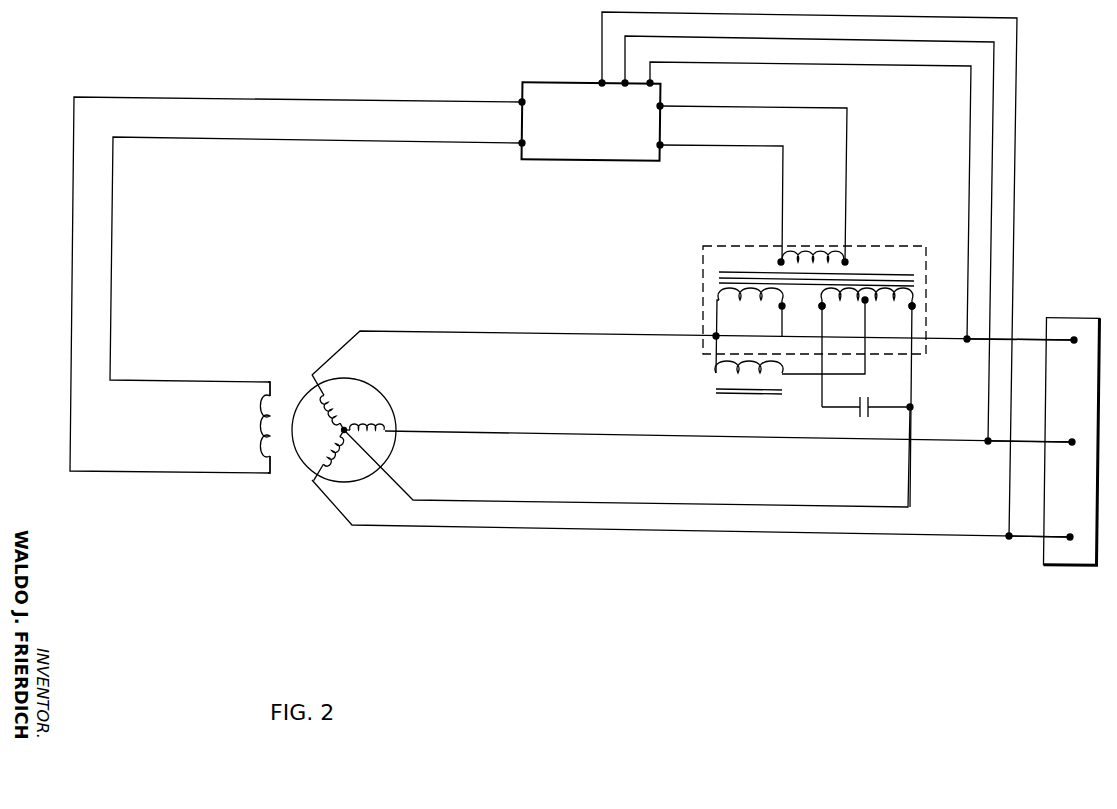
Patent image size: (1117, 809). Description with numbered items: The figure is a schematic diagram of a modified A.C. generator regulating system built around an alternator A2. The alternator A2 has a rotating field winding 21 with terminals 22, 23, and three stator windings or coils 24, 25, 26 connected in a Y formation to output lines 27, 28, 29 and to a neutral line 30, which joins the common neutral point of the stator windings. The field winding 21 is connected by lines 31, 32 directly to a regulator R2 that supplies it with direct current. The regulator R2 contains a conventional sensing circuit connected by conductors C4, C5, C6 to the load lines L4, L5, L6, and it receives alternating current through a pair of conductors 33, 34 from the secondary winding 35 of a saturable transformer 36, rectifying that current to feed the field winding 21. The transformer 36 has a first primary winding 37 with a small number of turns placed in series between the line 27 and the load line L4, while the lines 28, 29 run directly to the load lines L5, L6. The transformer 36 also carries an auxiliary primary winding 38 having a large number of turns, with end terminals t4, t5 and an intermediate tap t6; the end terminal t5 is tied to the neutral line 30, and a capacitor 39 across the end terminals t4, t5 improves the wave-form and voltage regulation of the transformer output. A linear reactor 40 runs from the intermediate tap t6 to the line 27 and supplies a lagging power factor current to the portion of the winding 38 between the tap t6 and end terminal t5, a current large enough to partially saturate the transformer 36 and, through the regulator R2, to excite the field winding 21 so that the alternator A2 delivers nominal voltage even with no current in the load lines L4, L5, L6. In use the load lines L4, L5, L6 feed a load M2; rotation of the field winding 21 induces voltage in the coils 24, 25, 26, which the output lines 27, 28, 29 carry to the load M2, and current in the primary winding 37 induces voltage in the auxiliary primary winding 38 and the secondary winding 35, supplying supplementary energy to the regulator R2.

The rotating field winding 21 is at (262, 409).
The terminal 22 is at (272, 386).
The terminal 23 is at (272, 463).
The stator winding 24 is at (330, 398).
The stator winding 25 is at (370, 427).
The stator winding 26 is at (333, 460).
The output line 27 is at (522, 333).
The output line 28 is at (526, 432).
The output line 29 is at (526, 530).
The neutral line 30 is at (495, 503).
The line 31 is at (72, 338).
The line 32 is at (113, 357).
The conductor 33 is at (768, 108).
The conductor 34 is at (752, 146).
The secondary winding 35 is at (781, 258).
The saturable transformer 36 is at (803, 363).
The first primary winding 37 is at (719, 302).
The auxiliary primary winding 38 is at (855, 300).
The capacitor 39 is at (858, 411).
The linear reactor 40 is at (716, 373).
The regulator R2 is at (558, 83).
The alternator A2 is at (364, 425).
The load M2 is at (1062, 318).
The conductor C4 is at (970, 101).
The conductor C5 is at (993, 110).
The conductor C6 is at (1016, 140).
The load line L4 is at (978, 343).
The load line L5 is at (960, 440).
The load line L6 is at (966, 537).
The end terminal t4 is at (820, 309).
The end terminal t5 is at (913, 308).
The intermediate tap t6 is at (865, 307).